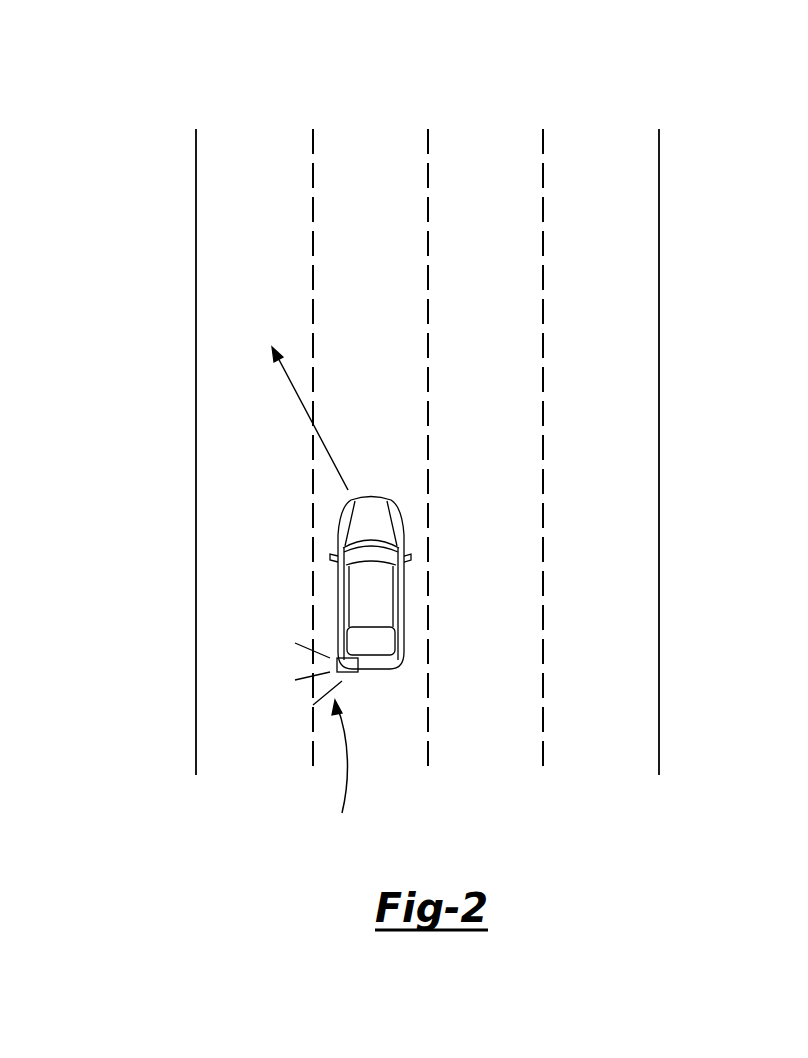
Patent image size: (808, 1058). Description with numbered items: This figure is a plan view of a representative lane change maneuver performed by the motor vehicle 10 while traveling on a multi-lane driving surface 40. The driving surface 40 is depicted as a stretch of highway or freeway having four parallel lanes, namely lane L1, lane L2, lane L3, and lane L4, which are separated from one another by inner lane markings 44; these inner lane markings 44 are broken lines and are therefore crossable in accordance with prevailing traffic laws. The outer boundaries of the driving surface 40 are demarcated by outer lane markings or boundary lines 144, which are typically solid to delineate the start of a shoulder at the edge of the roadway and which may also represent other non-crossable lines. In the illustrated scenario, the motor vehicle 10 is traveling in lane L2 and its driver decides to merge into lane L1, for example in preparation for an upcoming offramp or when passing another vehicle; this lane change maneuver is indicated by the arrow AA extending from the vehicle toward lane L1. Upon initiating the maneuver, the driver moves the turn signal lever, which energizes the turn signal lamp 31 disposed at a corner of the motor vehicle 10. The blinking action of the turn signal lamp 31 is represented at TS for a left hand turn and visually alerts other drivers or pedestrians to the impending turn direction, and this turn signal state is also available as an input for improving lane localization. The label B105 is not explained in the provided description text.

The multi-lane driving surface 40 is at (745, 130).
The outer lane markings/boundary lines 144 is at (196, 277).
The inner lane markings 44 is at (543, 277).
The motor vehicle 10 is at (386, 605).
The turn signal lamp 31 is at (347, 672).
The arrow indicating lane change maneuver AA is at (325, 445).
The turn signal blinking action TS is at (336, 772).
The lane L1 is at (256, 755).
The lane L2 is at (373, 755).
The lane L3 is at (488, 755).
The lane L4 is at (604, 755).
The block label B105 is at (781, 507).